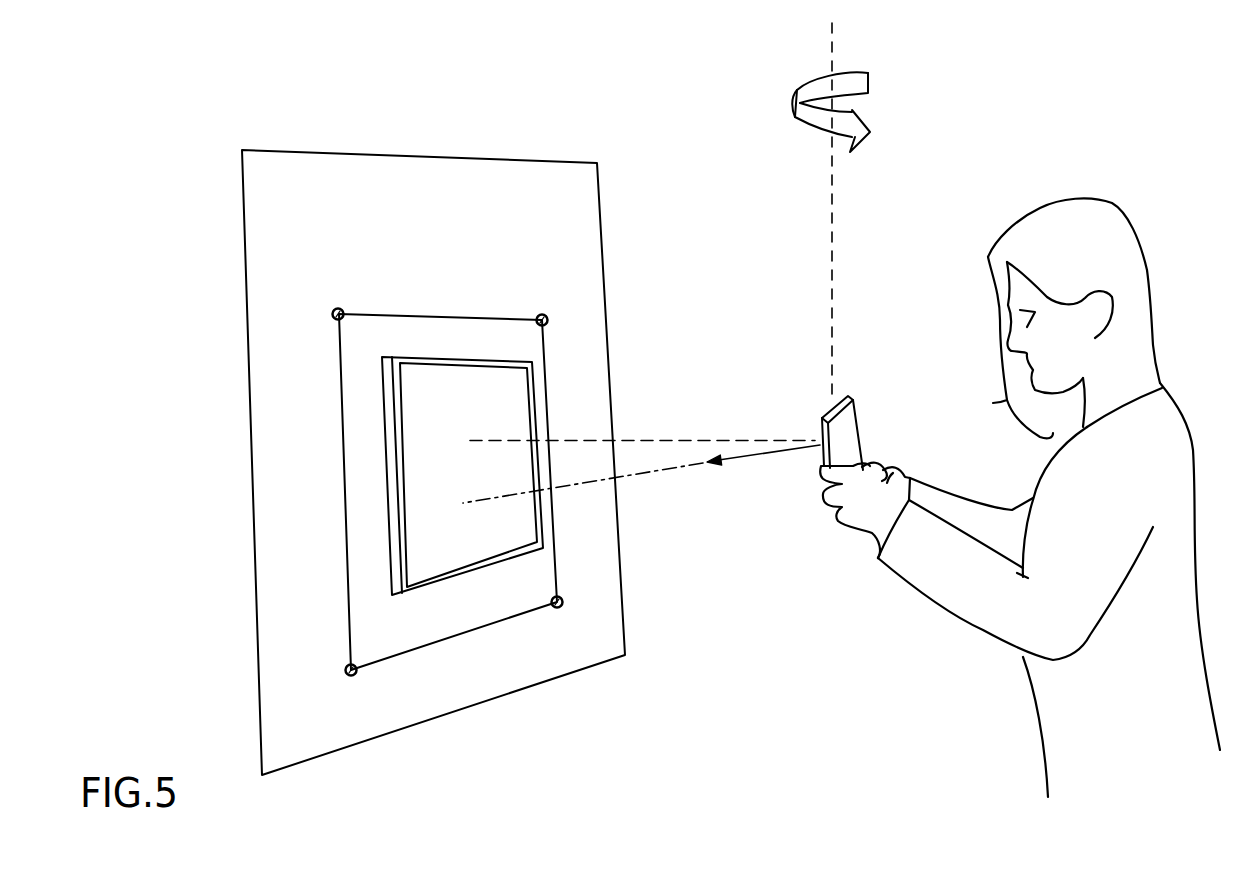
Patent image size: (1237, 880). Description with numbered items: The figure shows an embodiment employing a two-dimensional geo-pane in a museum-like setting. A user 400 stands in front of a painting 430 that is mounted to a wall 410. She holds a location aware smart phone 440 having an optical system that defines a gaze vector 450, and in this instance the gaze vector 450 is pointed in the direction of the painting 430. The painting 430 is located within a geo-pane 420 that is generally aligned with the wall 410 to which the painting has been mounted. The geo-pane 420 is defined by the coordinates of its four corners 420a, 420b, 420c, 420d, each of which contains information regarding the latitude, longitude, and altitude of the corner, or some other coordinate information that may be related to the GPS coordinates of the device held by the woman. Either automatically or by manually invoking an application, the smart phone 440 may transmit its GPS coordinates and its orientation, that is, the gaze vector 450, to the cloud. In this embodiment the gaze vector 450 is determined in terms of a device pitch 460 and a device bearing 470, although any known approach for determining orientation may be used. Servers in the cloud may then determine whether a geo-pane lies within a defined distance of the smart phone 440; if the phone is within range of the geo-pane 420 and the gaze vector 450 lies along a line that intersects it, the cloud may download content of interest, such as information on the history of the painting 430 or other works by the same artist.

The user 400 is at (963, 592).
The wall 410 is at (367, 205).
The geo-pane 420 is at (467, 317).
The corner 420a is at (349, 675).
The corner 420b is at (560, 607).
The corner 420c is at (334, 309).
The corner 420d is at (545, 316).
The painting 430 is at (450, 555).
The location aware smart phone 440 is at (820, 452).
The gaze vector 450 is at (747, 462).
The device pitch 460 is at (707, 461).
The device bearing 470 is at (860, 68).